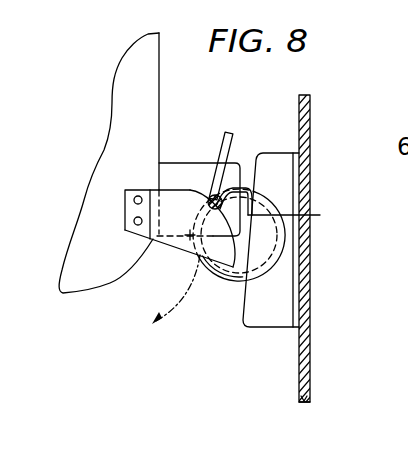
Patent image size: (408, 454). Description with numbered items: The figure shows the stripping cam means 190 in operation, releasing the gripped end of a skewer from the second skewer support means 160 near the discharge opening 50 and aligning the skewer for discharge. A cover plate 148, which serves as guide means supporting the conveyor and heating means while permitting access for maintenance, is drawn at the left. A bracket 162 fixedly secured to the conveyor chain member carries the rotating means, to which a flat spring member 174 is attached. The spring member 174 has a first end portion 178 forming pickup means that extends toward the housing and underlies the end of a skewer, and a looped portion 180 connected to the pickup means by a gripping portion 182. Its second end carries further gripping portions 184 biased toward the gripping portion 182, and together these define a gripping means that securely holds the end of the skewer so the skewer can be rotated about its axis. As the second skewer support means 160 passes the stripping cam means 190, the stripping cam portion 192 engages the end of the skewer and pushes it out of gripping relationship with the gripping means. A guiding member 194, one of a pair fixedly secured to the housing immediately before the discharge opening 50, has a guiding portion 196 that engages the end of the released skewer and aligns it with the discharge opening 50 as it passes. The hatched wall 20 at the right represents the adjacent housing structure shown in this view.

The wall 20 is at (314, 313).
The discharge opening 50 is at (305, 394).
The cover plate 148 is at (145, 80).
The second skewer support means 160 is at (205, 278).
The bracket 162 is at (172, 163).
The flat spring member 174 is at (286, 196).
The first end portion 178 is at (236, 133).
The looped portion 180 is at (272, 262).
The gripping portion 182 is at (199, 196).
The further gripping portions 184 is at (305, 212).
The stripping cam means 190 is at (167, 249).
The stripping cam portion 192 is at (188, 189).
The guiding member 194 is at (266, 318).
The guiding portion 196 is at (242, 287).